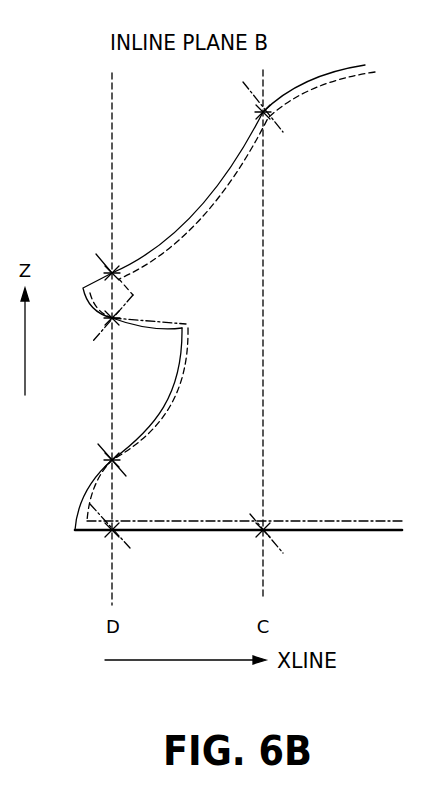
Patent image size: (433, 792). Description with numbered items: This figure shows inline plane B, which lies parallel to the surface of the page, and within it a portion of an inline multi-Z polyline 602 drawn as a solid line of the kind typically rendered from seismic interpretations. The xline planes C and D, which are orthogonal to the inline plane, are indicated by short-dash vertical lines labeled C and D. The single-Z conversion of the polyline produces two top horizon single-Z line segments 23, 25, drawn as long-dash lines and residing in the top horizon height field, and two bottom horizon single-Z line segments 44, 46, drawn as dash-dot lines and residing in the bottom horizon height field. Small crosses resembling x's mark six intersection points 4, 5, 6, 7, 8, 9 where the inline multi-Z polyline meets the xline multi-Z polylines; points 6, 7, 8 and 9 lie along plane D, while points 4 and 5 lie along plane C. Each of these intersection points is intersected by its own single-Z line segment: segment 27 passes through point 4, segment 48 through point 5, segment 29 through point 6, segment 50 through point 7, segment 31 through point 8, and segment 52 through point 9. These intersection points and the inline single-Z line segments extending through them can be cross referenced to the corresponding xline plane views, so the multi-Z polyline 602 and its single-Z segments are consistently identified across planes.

The intersection point 4 is at (268, 97).
The intersection point 5 is at (269, 517).
The intersection point 6 is at (100, 272).
The intersection point 7 is at (100, 325).
The intersection point 8 is at (101, 464).
The intersection point 9 is at (101, 546).
The top horizon single-Z line segment 23 is at (309, 93).
The top horizon single-Z line segment 25 is at (176, 400).
The single-Z line segment 27 is at (247, 89).
The single-Z line segment 29 is at (105, 263).
The single-Z line segment 31 is at (106, 452).
The bottom horizon single-Z line segment 44 is at (141, 316).
The bottom horizon single-Z line segment 46 is at (201, 519).
The single-Z line segment 48 is at (254, 511).
The single-Z line segment 50 is at (102, 336).
The single-Z line segment 52 is at (125, 545).
The inline multi-Z polyline 602 is at (333, 532).